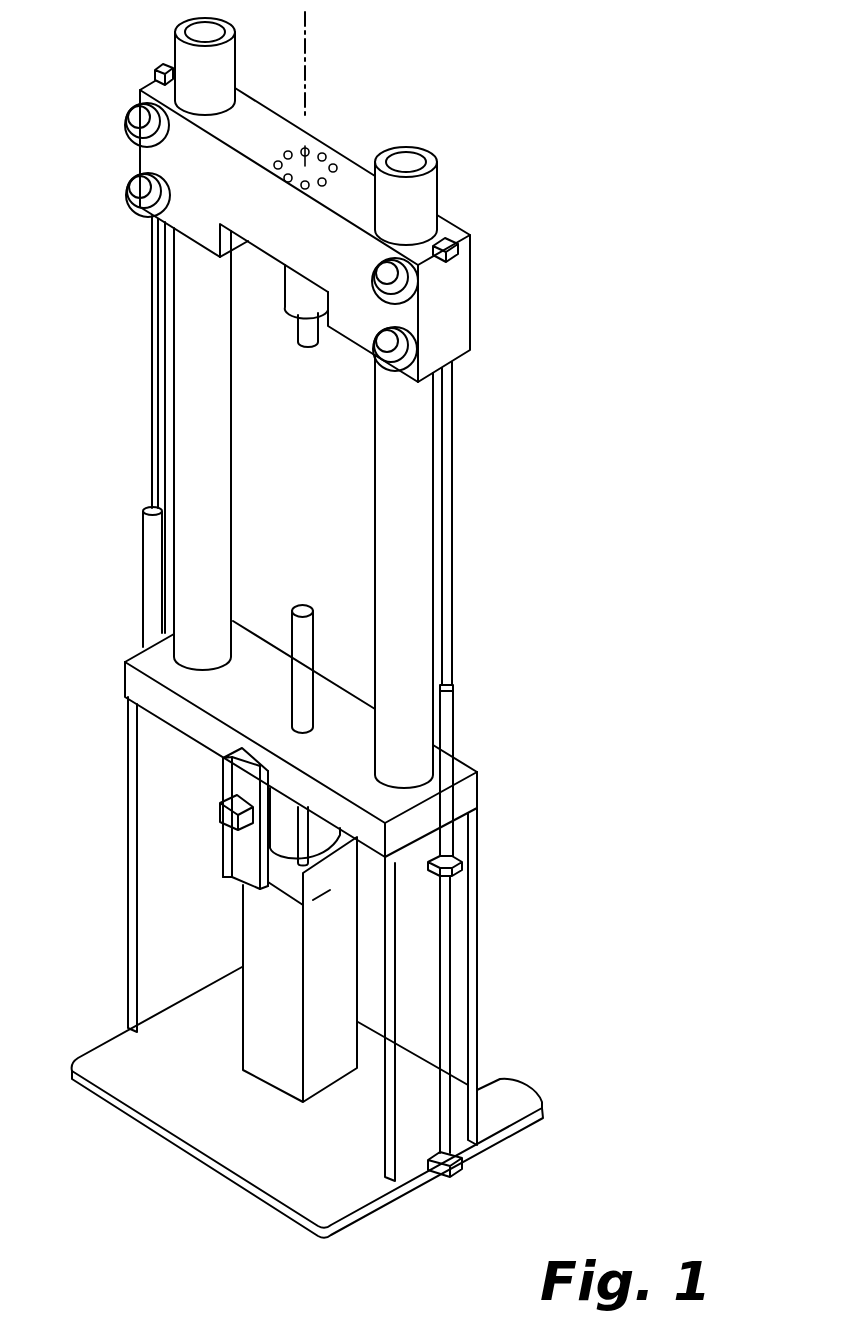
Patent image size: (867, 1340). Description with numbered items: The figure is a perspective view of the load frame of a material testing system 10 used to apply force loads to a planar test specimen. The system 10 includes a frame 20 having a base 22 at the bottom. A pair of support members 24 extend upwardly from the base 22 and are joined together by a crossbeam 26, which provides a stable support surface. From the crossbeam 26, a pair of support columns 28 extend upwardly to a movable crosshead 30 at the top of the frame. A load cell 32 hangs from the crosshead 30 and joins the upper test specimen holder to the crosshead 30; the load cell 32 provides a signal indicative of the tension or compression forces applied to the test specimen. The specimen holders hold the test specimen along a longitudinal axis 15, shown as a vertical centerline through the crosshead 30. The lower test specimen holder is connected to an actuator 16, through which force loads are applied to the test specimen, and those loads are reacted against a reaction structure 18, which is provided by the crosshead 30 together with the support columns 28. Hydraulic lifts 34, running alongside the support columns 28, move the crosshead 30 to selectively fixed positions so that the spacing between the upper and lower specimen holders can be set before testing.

The material testing system 10 is at (512, 352).
The longitudinal axis 15 is at (306, 102).
The actuator 16 is at (205, 826).
The reaction structure 18 is at (122, 156).
The frame 20 is at (498, 808).
The base 22 is at (182, 1136).
The support members 24 is at (137, 893).
The crossbeam 26 is at (122, 661).
The support columns 28 is at (192, 410).
The crosshead 30 is at (470, 248).
The load cell 32 is at (297, 288).
The hydraulic lifts 34 is at (143, 532).